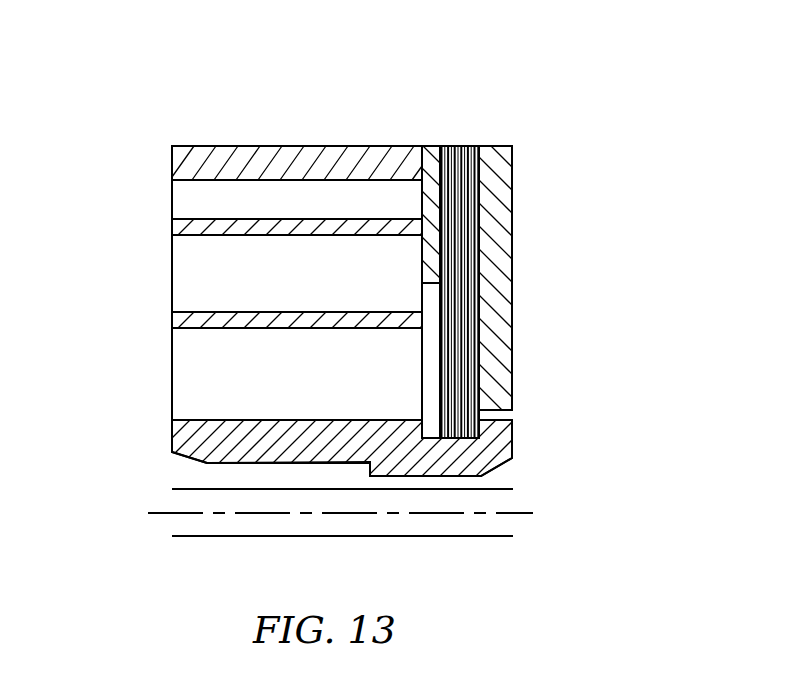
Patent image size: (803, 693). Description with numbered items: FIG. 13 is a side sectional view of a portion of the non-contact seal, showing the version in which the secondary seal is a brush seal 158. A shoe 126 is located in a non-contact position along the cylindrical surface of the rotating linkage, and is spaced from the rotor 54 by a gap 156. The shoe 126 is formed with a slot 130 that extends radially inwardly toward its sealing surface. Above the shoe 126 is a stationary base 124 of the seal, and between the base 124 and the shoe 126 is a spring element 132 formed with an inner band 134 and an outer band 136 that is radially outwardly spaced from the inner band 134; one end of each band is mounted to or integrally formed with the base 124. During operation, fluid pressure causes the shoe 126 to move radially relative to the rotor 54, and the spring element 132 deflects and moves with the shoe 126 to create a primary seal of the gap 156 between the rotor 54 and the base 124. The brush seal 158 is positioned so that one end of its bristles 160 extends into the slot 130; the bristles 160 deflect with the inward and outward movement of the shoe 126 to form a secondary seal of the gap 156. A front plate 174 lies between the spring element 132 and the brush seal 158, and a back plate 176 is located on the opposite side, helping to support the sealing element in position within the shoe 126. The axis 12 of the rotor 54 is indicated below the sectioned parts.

The spring element 132 is at (150, 96).
The stationary base 124 is at (318, 146).
The outer band 136 is at (172, 227).
The inner band 134 is at (172, 318).
The front plate 174 is at (428, 146).
The brush seal 158 is at (463, 140).
The back plate 176 is at (512, 256).
The bristles 160 is at (460, 337).
The shoe 126 is at (172, 433).
The slot 130 is at (432, 425).
The gap 156 is at (485, 482).
The rotor 54 is at (485, 536).
The axis 12 is at (150, 513).